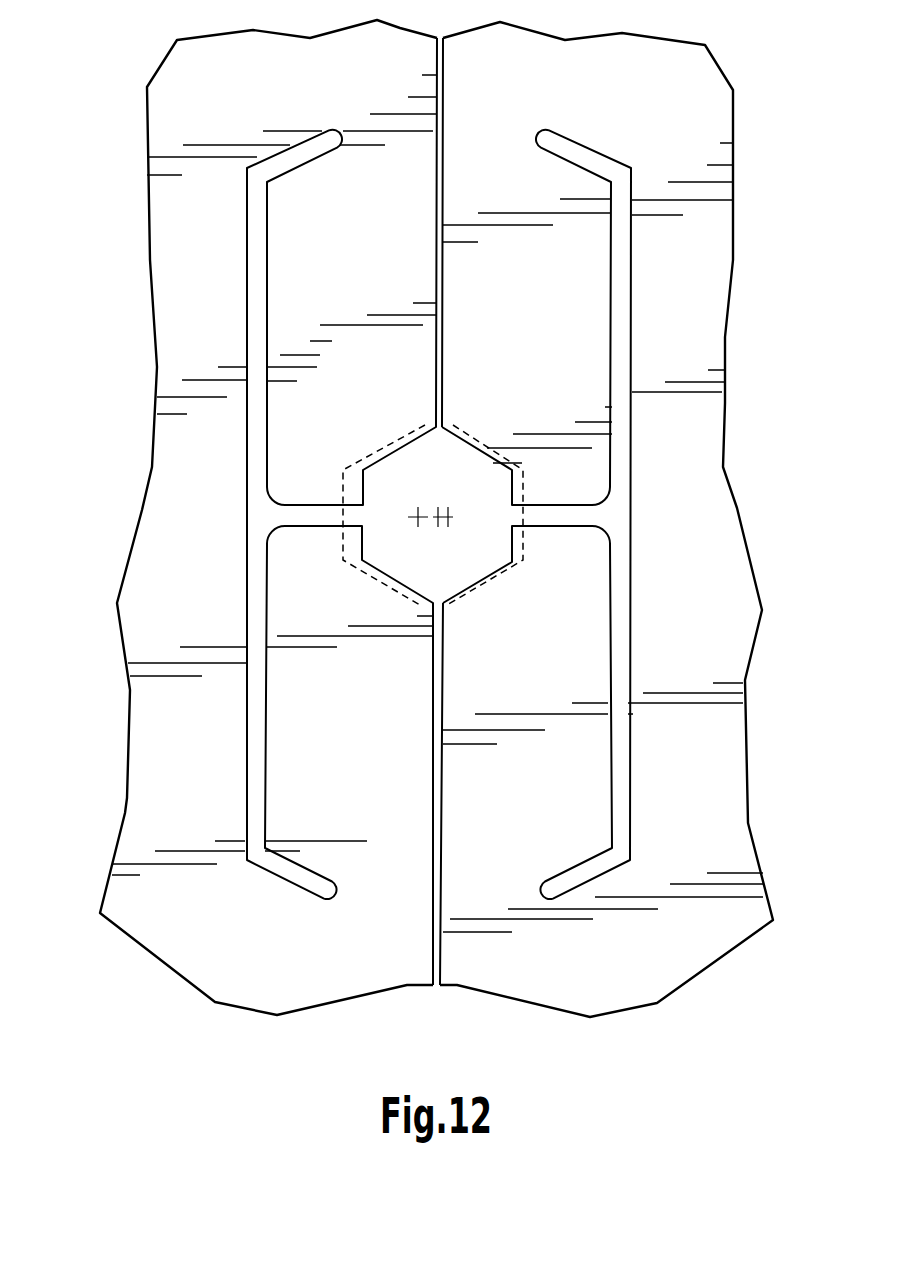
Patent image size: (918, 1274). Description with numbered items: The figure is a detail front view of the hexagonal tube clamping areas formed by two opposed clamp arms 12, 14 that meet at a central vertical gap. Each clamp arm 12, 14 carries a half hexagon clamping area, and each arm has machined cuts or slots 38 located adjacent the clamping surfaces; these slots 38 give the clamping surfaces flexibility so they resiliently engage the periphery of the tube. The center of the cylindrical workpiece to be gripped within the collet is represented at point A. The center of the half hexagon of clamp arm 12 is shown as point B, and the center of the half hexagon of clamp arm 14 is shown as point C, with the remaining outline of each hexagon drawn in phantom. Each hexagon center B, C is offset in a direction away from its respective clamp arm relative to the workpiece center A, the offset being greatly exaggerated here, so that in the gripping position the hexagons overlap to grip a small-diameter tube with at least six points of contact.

The clamp arm 12 is at (180, 763).
The clamp arm 14 is at (693, 290).
The slots 38 is at (617, 747).
The center of cylindrical workpiece A is at (440, 510).
The center of half hexagon of clamp arm 12 B is at (450, 513).
The center of half hexagon of clamp arm 14 C is at (417, 512).